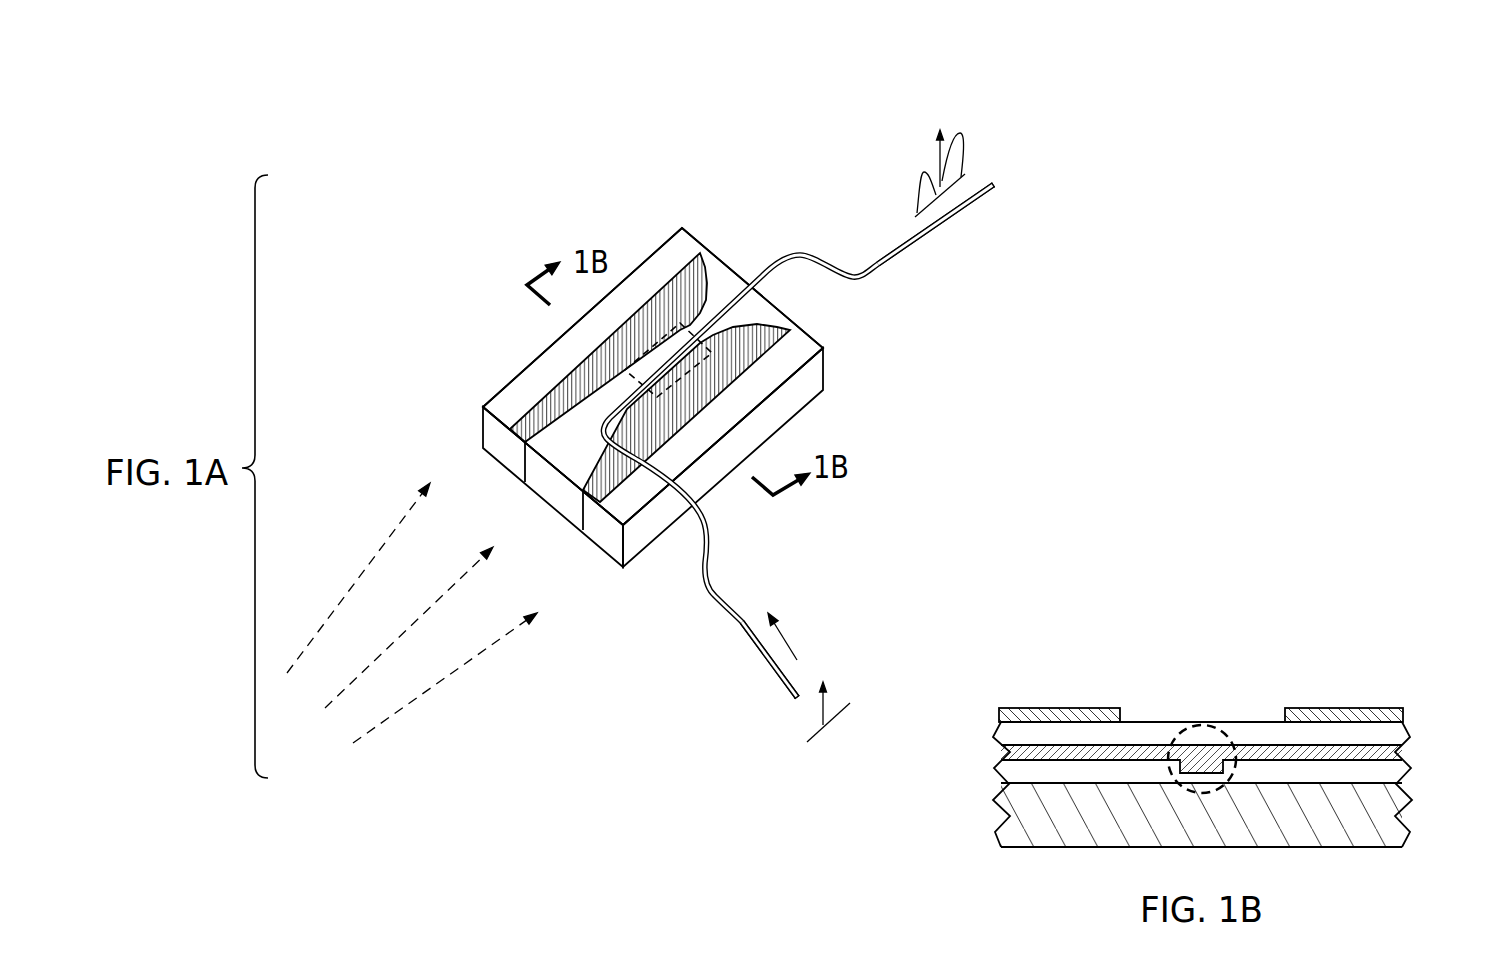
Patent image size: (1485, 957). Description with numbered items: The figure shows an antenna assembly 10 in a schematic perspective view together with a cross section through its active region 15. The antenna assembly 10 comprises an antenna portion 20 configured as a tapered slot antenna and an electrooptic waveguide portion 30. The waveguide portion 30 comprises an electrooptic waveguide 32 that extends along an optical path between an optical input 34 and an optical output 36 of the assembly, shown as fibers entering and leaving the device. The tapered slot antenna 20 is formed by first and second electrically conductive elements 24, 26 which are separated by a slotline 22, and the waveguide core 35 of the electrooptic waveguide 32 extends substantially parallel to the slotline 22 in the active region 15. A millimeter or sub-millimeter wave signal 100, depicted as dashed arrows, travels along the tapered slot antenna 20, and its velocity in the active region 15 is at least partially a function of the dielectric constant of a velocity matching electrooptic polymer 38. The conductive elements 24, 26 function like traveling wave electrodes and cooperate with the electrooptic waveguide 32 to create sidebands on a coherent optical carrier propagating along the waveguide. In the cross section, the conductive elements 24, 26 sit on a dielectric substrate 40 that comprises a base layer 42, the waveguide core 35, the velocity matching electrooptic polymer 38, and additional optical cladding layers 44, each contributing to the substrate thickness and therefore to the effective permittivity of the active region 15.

In FIG. 1A, the antenna assembly 10 is at (479, 211).
In FIG. 1A, the active region 15 is at (630, 373).
In FIG. 1A, the antenna portion 20 is at (665, 256).
In FIG. 1A, the slotline 22 is at (741, 315).
In FIG. 1A, the first electrically conductive element 24 is at (698, 282).
In FIG. 1B, the first electrically conductive element 24 is at (1058, 707).
In FIG. 1A, the second electrically conductive element 26 is at (748, 358).
In FIG. 1B, the second electrically conductive element 26 is at (1337, 707).
In FIG. 1A, the electrooptic waveguide portion 30 is at (588, 442).
In FIG. 1B, the electrooptic waveguide 32 is at (1228, 745).
In FIG. 1A, the optical input 34 is at (738, 607).
In FIG. 1B, the waveguide core 35 is at (1203, 762).
In FIG. 1A, the optical output 36 is at (937, 234).
In FIG. 1B, the velocity matching electrooptic polymer 38 is at (1403, 750).
In FIG. 1A, the dielectric substrate 40 is at (637, 543).
In FIG. 1B, the dielectric substrate 40 is at (992, 723).
In FIG. 1B, the base layer 42 is at (1403, 812).
In FIG. 1B, the additional optical cladding layer 44 is at (1404, 726).
In FIG. 1A, the millimeter or sub-millimeter wave signal 100 is at (372, 657).